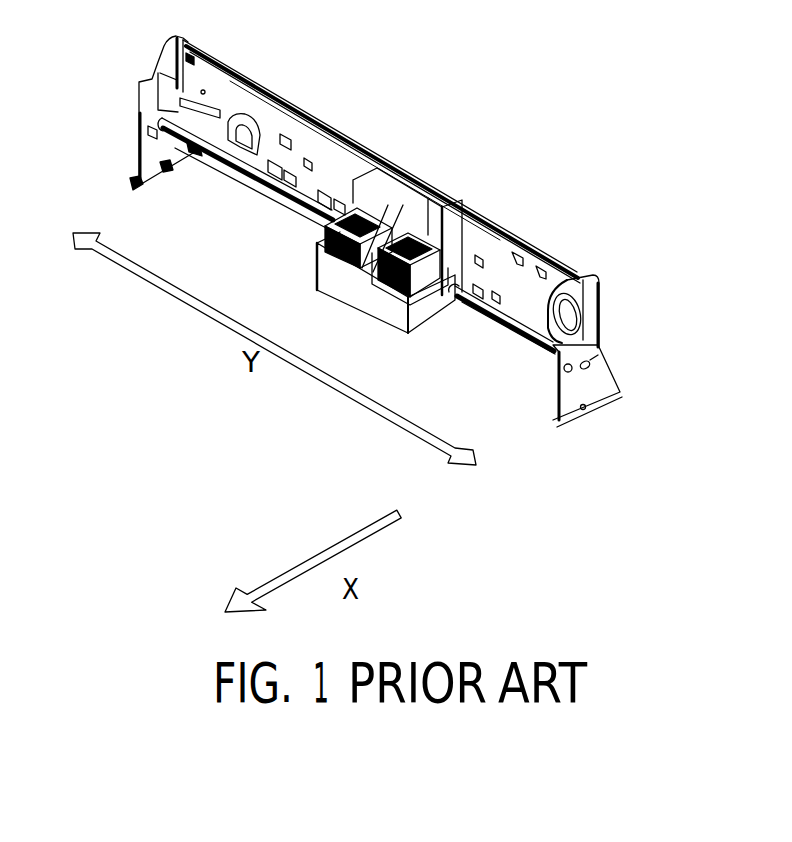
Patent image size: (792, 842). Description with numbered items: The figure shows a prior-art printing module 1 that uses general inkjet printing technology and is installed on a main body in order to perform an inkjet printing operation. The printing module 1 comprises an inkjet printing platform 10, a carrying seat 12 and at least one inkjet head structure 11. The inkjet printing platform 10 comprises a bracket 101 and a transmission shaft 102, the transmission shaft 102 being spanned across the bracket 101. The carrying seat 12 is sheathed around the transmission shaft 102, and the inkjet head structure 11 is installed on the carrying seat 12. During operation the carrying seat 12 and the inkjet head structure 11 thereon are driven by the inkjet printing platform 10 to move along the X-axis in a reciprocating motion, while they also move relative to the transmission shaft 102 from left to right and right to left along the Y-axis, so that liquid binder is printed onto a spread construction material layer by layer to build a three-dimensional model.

The printing module 1 is at (758, 147).
The inkjet printing platform 10 is at (683, 246).
The bracket 101 is at (577, 282).
The transmission shaft 102 is at (553, 345).
The inkjet head structure 11 is at (342, 240).
The carrying seat 12 is at (428, 308).